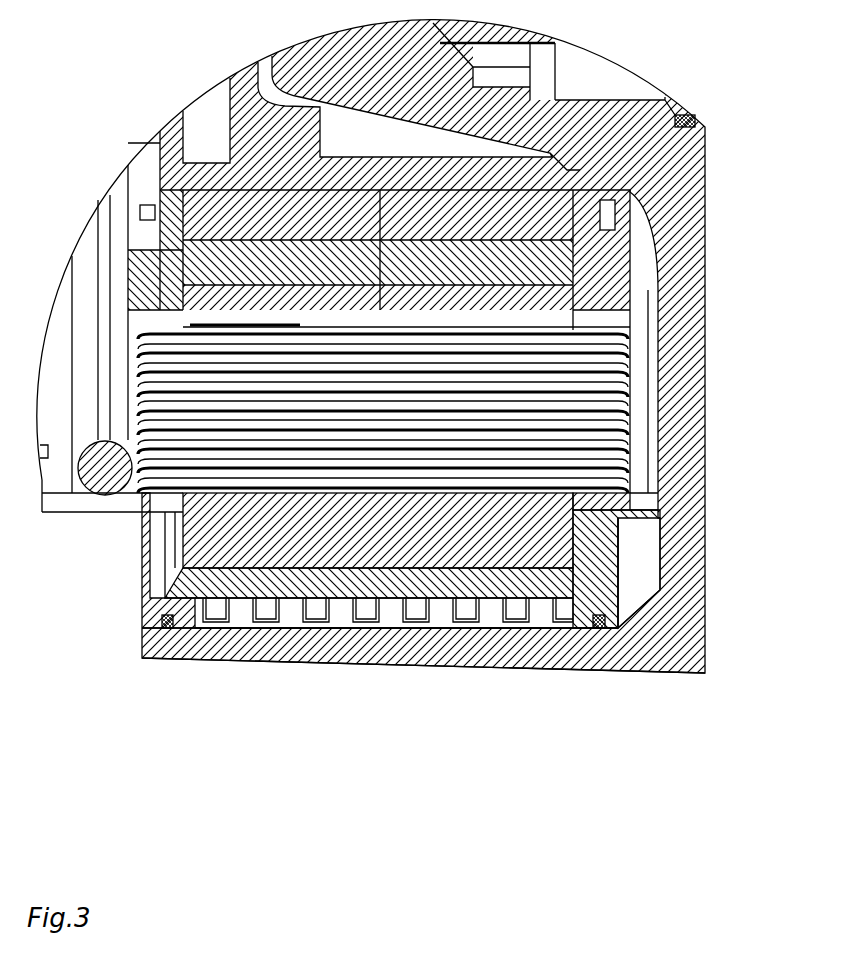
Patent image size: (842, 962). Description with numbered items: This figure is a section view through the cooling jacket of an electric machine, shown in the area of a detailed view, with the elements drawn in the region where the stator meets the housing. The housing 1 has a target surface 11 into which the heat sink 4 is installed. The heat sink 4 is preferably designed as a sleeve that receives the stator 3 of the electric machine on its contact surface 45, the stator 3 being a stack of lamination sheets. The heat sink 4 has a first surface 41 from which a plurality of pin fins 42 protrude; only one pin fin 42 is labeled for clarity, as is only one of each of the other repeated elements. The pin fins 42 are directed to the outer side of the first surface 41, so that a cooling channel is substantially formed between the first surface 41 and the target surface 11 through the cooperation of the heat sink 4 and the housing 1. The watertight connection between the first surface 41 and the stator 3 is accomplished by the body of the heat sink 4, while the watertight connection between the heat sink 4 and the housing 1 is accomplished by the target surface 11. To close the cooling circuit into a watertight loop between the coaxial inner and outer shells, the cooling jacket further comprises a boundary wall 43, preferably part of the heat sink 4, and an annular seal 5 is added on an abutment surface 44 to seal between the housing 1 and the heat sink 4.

The housing 1 is at (700, 143).
The stator 3 is at (500, 530).
The heat sink 4 is at (597, 578).
The annular seal 5 is at (617, 628).
The target surface 11 is at (333, 634).
The first surface 41 is at (440, 605).
The pin fin 42 is at (500, 630).
The boundary wall 43 is at (196, 617).
The abutment surface 44 is at (588, 640).
The contact surface 45 is at (240, 573).